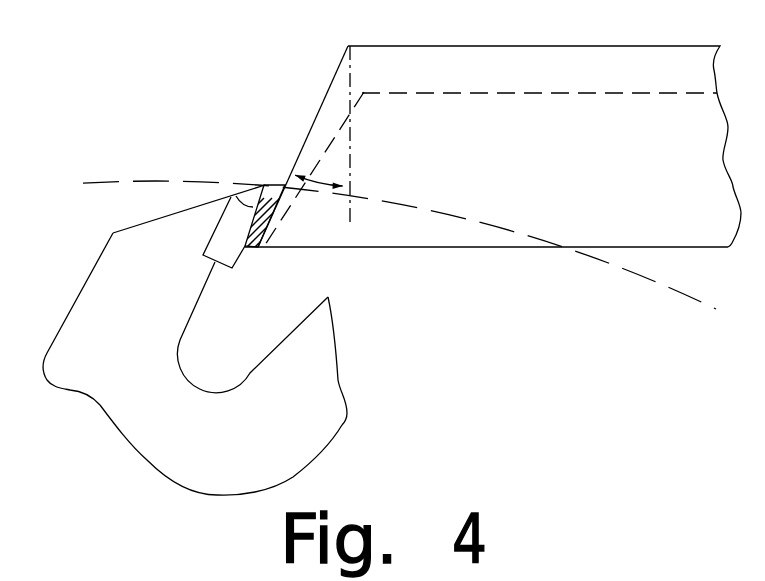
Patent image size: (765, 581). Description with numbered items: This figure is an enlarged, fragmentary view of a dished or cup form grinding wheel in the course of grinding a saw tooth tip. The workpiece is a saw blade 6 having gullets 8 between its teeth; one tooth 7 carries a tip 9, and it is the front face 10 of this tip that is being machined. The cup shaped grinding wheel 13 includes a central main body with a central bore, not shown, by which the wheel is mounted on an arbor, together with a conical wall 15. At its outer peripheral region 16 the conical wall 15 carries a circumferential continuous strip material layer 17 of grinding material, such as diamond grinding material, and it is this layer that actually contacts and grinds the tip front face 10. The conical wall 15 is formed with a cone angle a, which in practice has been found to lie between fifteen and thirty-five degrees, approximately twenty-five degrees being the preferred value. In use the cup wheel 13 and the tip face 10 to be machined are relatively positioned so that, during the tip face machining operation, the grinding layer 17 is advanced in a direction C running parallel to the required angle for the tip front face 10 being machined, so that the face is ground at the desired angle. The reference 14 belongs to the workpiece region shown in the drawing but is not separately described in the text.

The saw blade 6 is at (203, 452).
The tooth 7 is at (141, 304).
The gullets 8 is at (252, 327).
The tip 9 is at (236, 196).
The front face 10 is at (236, 267).
The cup shaped grinding wheel 13 is at (363, 92).
The workpiece 14 is at (540, 77).
The conical wall 15 is at (313, 124).
The outer peripheral region 16 is at (284, 204).
The strip material layer of grinding material 17 is at (262, 184).
The direction of advance C is at (237, 334).
The cone angle a is at (320, 178).